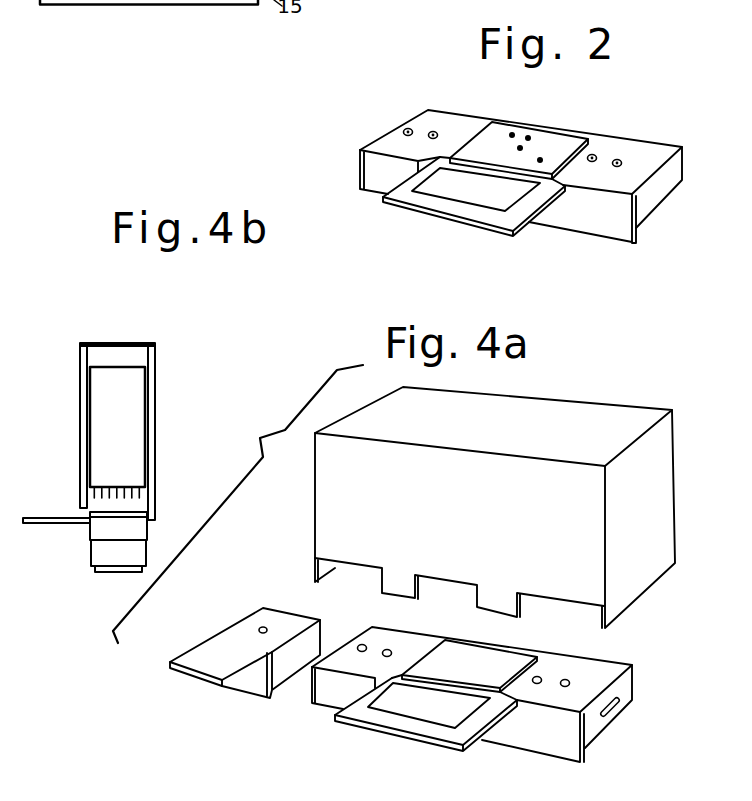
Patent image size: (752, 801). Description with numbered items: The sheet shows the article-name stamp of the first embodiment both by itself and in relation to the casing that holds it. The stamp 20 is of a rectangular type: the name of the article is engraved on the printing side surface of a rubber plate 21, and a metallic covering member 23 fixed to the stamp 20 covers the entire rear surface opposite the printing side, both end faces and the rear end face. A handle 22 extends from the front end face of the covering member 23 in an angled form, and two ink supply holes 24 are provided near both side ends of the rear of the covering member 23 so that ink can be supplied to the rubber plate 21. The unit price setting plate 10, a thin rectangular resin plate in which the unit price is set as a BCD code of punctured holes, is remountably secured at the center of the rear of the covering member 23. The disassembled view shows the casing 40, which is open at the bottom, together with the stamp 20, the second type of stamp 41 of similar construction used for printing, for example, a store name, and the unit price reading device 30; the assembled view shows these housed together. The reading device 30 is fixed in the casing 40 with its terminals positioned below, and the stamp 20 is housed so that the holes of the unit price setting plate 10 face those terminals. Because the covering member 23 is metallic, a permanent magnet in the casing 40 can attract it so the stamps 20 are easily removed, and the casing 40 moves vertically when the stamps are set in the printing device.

In FIG. 2, the unit price setting plate 10 is at (553, 145).
In FIG. 4A, the unit price setting plate 10 is at (495, 663).
In FIG. 4B, the unit price setting plate 10 is at (137, 511).
In FIG. 2, the stamp 20 is at (663, 190).
In FIG. 4A, the stamp 20 is at (620, 659).
In FIG. 4B, the stamp 20 is at (87, 529).
In FIG. 2, the rubber plate 21 is at (617, 232).
In FIG. 2, the handle 22 is at (402, 196).
In FIG. 2, the metallic covering member 23 is at (464, 122).
In FIG. 2, the ink supply holes 24 is at (431, 130).
In FIG. 4B, the unit price reading device 30 is at (134, 437).
In FIG. 4A, the casing 40 is at (642, 401).
In FIG. 4B, the casing 40 is at (159, 377).
In FIG. 4A, the other type of stamp 41 is at (215, 658).